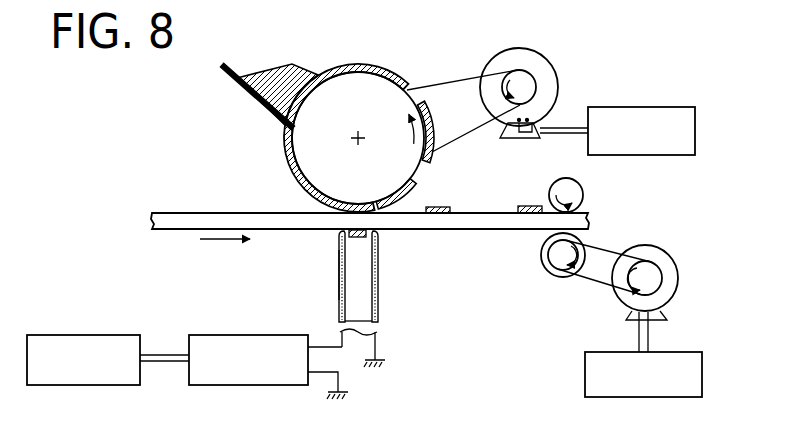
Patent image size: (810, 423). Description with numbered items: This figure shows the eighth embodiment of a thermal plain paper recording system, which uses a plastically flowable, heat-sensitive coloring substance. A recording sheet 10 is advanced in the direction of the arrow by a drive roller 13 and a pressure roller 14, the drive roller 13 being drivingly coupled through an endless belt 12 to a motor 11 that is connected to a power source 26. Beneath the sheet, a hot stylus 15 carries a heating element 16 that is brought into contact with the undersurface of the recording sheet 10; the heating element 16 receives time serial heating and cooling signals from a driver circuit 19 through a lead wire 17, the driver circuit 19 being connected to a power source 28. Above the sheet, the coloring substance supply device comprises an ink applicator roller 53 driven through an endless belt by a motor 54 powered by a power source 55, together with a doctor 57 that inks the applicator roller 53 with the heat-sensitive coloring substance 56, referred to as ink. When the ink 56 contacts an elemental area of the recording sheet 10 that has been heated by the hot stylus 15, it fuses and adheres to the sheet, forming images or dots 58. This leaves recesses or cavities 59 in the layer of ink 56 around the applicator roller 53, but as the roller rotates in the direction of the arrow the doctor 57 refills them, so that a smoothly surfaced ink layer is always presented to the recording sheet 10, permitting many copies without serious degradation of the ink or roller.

The recording sheet 10 is at (485, 222).
The motor 11 is at (658, 255).
The endless belt 12 is at (612, 247).
The drive roller 13 is at (547, 262).
The pressure roller 14 is at (568, 190).
The hot stylus 15 is at (375, 285).
The heating element 16 is at (358, 240).
The lead wire 17 is at (339, 280).
The driver circuit 19 is at (245, 335).
The power source 26 is at (585, 370).
The power source 28 is at (85, 336).
The ink applicator roller 53 is at (366, 80).
The motor 54 is at (538, 63).
The power source 55 is at (642, 107).
The heat-sensitive coloring substance 56 is at (277, 72).
The doctor 57 is at (247, 103).
The images or dots 58 is at (527, 205).
The recesses or cavities 59 is at (423, 98).